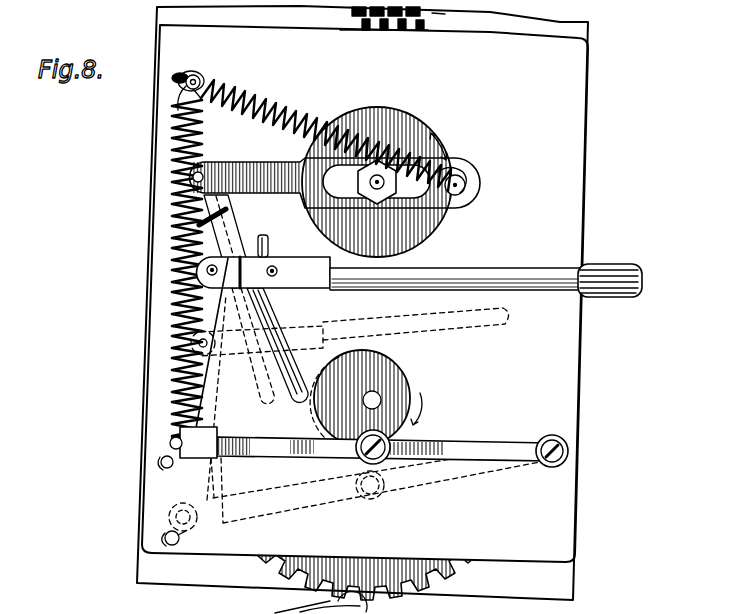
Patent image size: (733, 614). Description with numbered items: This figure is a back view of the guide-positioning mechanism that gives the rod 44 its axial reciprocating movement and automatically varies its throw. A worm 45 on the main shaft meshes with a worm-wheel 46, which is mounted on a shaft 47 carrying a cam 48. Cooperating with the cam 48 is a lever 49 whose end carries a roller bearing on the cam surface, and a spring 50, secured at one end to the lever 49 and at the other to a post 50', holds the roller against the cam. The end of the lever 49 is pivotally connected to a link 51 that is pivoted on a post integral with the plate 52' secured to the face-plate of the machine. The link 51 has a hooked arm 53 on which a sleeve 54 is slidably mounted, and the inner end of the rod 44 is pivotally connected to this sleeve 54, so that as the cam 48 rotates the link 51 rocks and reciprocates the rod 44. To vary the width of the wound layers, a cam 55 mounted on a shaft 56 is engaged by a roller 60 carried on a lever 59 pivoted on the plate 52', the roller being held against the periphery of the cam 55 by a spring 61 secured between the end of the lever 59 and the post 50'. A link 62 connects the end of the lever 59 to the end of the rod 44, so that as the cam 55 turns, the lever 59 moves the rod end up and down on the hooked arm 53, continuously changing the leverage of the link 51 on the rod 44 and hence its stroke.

The rod 44 is at (477, 272).
The worm 45 is at (445, 14).
The worm-wheel 46 is at (392, 27).
The shaft 47 is at (382, 187).
The cam 48 is at (388, 122).
The lever 49 is at (335, 188).
The spring 50 is at (326, 135).
The post 50' is at (205, 69).
The link 51 is at (228, 211).
The plate 52' is at (351, 420).
The hooked arm 53 is at (286, 303).
The sleeve 54 is at (279, 255).
The cam 55 is at (403, 373).
The shaft 56 is at (380, 400).
The lever 59 is at (275, 448).
The roller 60 is at (381, 456).
The spring 61 is at (165, 335).
The link 62 is at (194, 402).